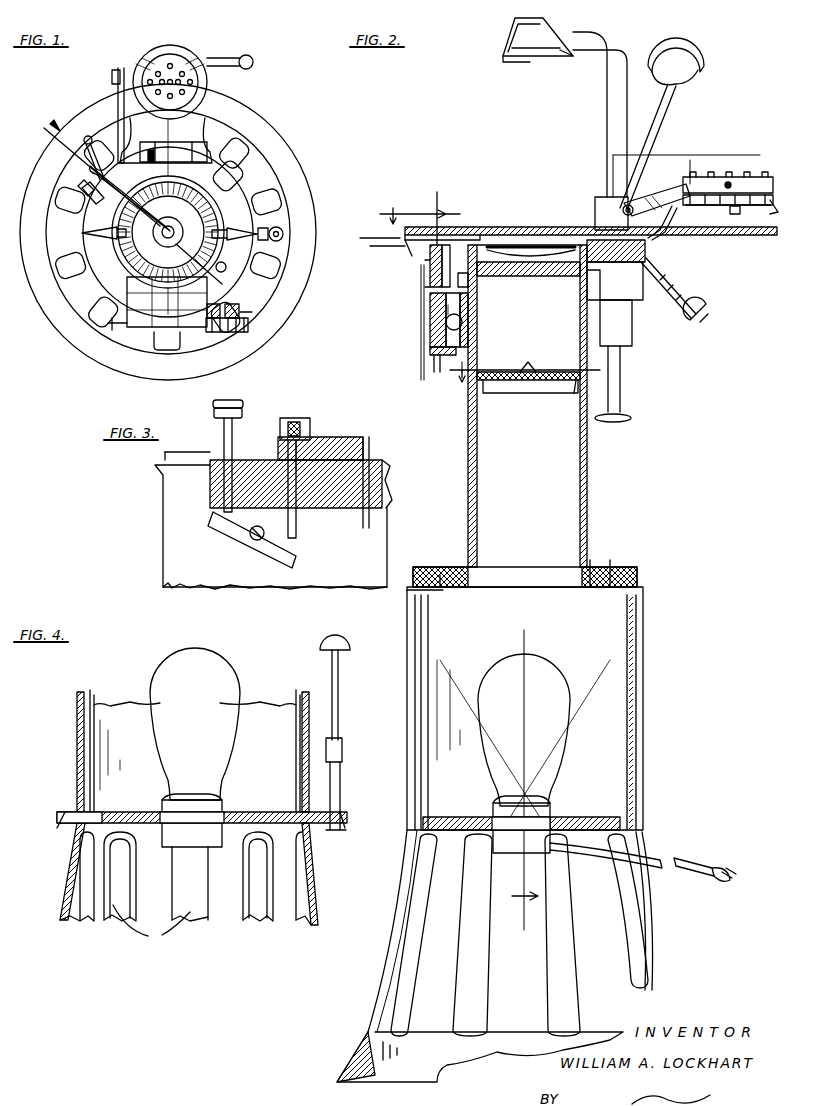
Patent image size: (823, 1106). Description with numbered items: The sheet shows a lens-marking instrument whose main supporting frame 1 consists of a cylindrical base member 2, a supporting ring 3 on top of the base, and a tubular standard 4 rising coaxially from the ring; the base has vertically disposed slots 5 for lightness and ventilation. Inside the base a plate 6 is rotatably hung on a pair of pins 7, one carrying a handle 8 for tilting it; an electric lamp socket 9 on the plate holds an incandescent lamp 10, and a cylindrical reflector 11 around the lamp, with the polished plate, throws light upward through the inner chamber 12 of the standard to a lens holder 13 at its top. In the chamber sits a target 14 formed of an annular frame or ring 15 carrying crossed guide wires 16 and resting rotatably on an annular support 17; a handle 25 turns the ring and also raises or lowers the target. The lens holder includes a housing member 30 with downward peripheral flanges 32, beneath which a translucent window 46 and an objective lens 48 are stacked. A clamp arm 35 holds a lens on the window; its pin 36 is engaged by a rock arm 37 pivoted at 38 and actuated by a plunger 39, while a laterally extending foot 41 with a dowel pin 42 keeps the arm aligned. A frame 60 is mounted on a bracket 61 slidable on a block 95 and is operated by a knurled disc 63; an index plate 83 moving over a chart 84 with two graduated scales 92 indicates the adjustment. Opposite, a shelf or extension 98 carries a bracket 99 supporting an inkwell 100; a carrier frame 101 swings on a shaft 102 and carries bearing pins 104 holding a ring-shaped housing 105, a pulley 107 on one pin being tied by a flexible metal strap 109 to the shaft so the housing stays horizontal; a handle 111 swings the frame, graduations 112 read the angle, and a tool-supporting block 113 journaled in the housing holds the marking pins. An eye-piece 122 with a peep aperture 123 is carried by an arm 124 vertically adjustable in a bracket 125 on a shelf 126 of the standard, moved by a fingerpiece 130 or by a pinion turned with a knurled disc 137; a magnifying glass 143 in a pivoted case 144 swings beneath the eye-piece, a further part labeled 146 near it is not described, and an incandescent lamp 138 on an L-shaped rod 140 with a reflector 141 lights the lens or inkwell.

In FIG. 1, the main supporting frame 1 is at (272, 150).
In FIG. 2, the main supporting frame 1 is at (470, 545).
In FIG. 1, the cylindrical base member 2 is at (290, 218).
In FIG. 2, the cylindrical base member 2 is at (407, 832).
In FIG. 2, the supporting ring 3 is at (628, 568).
In FIG. 2, the tubular standard 4 is at (590, 514).
In FIG. 1, the slots 5 is at (282, 268).
In FIG. 2, the slots 5 is at (578, 182).
In FIG. 4, the slots 5 is at (120, 690).
In FIG. 2, the plate 6 is at (671, 244).
In FIG. 4, the plate 6 is at (258, 812).
In FIG. 2, the pins 7 is at (724, 254).
In FIG. 4, the pins 7 is at (202, 828).
In FIG. 1, the handle 8 is at (284, 235).
In FIG. 2, the handle 8 is at (523, 384).
In FIG. 4, the handle 8 is at (342, 768).
In FIG. 2, the electric lamp socket 9 is at (488, 858).
In FIG. 4, the electric lamp socket 9 is at (200, 840).
In FIG. 2, the incandescent lamp 10 is at (525, 742).
In FIG. 4, the incandescent lamp 10 is at (195, 724).
In FIG. 2, the cylindrical reflector 11 is at (620, 648).
In FIG. 4, the cylindrical reflector 11 is at (262, 710).
In FIG. 2, the inner chamber 12 is at (562, 476).
In FIG. 2, the lens holder 13 is at (522, 227).
In FIG. 2, the target 14 is at (532, 380).
In FIG. 1, the annular frame or ring 15 is at (120, 194).
In FIG. 2, the annular frame or ring 15 is at (496, 396).
In FIG. 2, the guide wires 16 is at (528, 372).
In FIG. 2, the annular support 17 is at (574, 396).
In FIG. 1, the handle 25 is at (240, 160).
In FIG. 3, the housing member 30 is at (180, 538).
In FIG. 3, the peripheral flanges 32 is at (340, 508).
In FIG. 1, the clamp arm 35 is at (233, 300).
In FIG. 3, the clamp arm 35 is at (332, 437).
In FIG. 3, the pin 36 is at (298, 540).
In FIG. 3, the rock arm 37 is at (265, 558).
In FIG. 3, the pivot 38 is at (250, 538).
In FIG. 3, the plunger 39 is at (232, 438).
In FIG. 3, the foot 41 is at (382, 442).
In FIG. 3, the dowel pin 42 is at (368, 530).
In FIG. 2, the translucent window 46 is at (540, 276).
In FIG. 2, the objective lens 48 is at (512, 262).
In FIG. 2, the frame 60 is at (430, 284).
In FIG. 2, the bracket 61 is at (432, 320).
In FIG. 1, the knurled disc 63 is at (248, 325).
In FIG. 1, the index plate 83 is at (181, 338).
In FIG. 1, the chart 84 is at (138, 330).
In FIG. 1, the graduated scales 92 is at (150, 345).
In FIG. 2, the block 95 is at (464, 316).
In FIG. 2, the shelf or extension 98 is at (645, 264).
In FIG. 2, the bracket 99 is at (648, 250).
In FIG. 2, the inkwell 100 is at (758, 214).
In FIG. 1, the carrier frame 101 is at (206, 122).
In FIG. 2, the carrier frame 101 is at (652, 192).
In FIG. 1, the shaft 102 is at (173, 142).
In FIG. 2, the shaft 102 is at (604, 212).
In FIG. 2, the bearing pins 104 is at (730, 176).
In FIG. 2, the ring-shaped housing 105 is at (710, 176).
In FIG. 1, the pulley 107 is at (114, 72).
In FIG. 1, the flexible metal strap 109 is at (118, 100).
In FIG. 2, the flexible metal strap 109 is at (686, 175).
In FIG. 1, the handle 111 is at (246, 56).
In FIG. 1, the graduations 112 is at (154, 50).
In FIG. 1, the tool-supporting block 113 is at (182, 48).
In FIG. 1, the eye-piece 122 is at (150, 243).
In FIG. 2, the eye-piece 122 is at (545, 26).
In FIG. 2, the peep aperture 123 is at (526, 38).
In FIG. 1, the arm 124 is at (100, 226).
In FIG. 2, the arm 124 is at (608, 92).
In FIG. 1, the bracket 125 is at (84, 175).
In FIG. 2, the shelf 126 is at (630, 314).
In FIG. 2, the fingerpiece 130 is at (618, 412).
In FIG. 1, the knurled disc 137 is at (78, 188).
In FIG. 2, the incandescent lamp 138 is at (680, 84).
In FIG. 2, the L-shaped rod 140 is at (656, 120).
In FIG. 2, the reflector 141 is at (704, 66).
In FIG. 2, the magnifying glass 143 is at (530, 56).
In FIG. 2, the case 144 is at (505, 65).
In FIG. 1, the pin 146 is at (234, 267).
In FIG. 2, the pin 146 is at (562, 56).